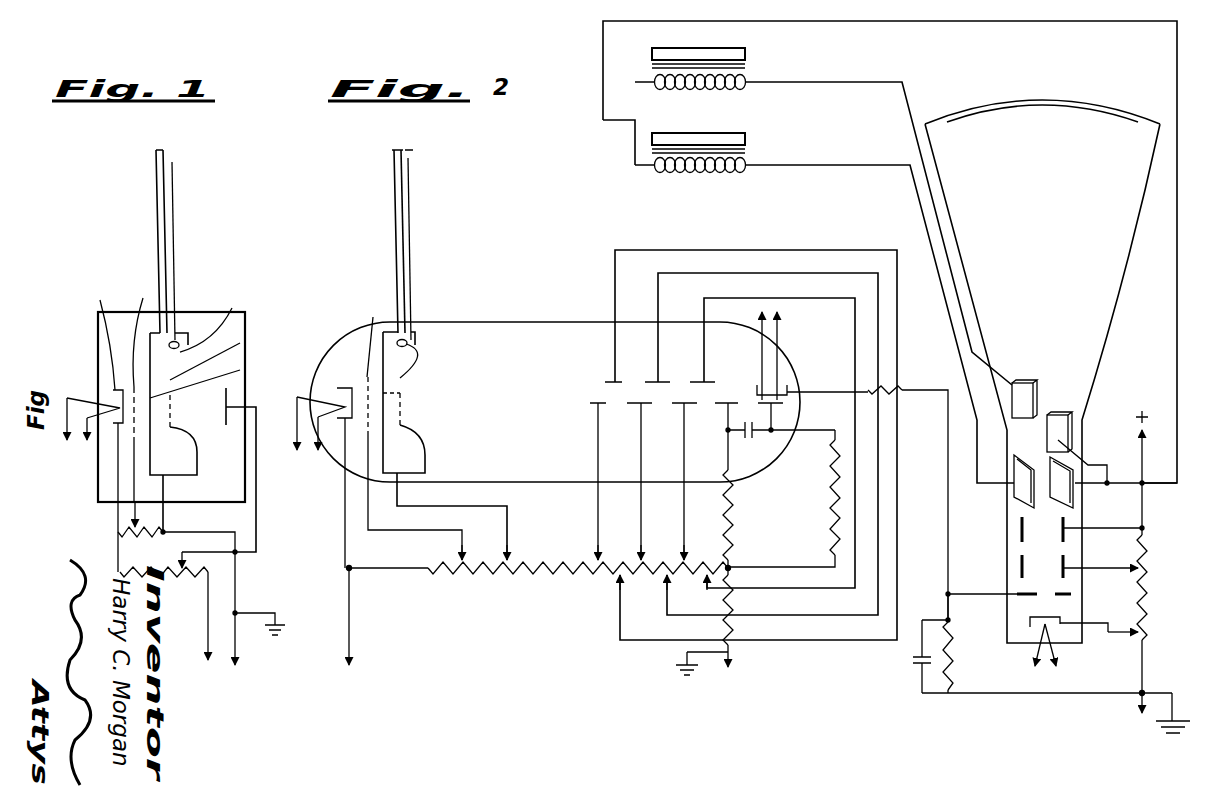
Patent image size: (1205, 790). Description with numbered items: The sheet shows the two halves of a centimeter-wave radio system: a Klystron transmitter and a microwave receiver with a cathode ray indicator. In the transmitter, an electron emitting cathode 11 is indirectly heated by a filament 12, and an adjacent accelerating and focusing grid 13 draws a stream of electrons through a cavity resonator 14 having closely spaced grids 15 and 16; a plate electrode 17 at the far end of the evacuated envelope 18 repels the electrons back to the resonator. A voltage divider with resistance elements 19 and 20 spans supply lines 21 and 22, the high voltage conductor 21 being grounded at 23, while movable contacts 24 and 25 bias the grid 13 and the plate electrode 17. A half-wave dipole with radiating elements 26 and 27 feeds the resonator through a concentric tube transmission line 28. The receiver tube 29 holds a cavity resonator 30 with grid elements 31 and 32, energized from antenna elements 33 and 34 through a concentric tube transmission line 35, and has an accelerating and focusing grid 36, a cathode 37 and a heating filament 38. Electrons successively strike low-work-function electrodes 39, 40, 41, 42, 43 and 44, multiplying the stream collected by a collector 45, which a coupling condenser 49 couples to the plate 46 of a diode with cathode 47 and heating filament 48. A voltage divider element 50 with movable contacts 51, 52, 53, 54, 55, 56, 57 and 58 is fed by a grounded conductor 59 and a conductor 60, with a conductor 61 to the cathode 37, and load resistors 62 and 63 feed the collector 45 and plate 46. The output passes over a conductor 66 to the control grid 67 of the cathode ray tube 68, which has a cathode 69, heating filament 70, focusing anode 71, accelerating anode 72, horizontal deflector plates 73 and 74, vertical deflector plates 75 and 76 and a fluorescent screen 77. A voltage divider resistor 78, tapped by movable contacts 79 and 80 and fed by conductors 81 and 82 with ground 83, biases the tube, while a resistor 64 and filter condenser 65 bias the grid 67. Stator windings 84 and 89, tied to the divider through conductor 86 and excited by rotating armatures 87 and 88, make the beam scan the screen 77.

In FIG. 1, the electron emitting cathode 11 is at (92, 337).
In FIG. 1, the filament 12 is at (115, 390).
In FIG. 1, the accelerating and focusing grid 13 is at (125, 388).
In FIG. 1, the cavity resonator 14 is at (197, 350).
In FIG. 1, the grid 15 is at (223, 355).
In FIG. 1, the grid 16 is at (213, 377).
In FIG. 1, the plate electrode 17 is at (234, 474).
In FIG. 1, the evacuated envelope 18 is at (218, 315).
In FIG. 1, the resistance element 19 is at (150, 530).
In FIG. 1, the resistance element 20 is at (203, 634).
In FIG. 1, the supply line 21 is at (240, 588).
In FIG. 1, the supply line 22 is at (210, 603).
In FIG. 1, the ground 23 is at (276, 616).
In FIG. 1, the movable contact 24 is at (130, 515).
In FIG. 1, the movable contact 25 is at (180, 560).
In FIG. 1, the radiating element 26 is at (156, 152).
In FIG. 1, the radiating element 27 is at (173, 152).
In FIG. 1, the concentric tube transmission line 28 is at (157, 210).
In FIG. 2, the electron discharge device 29 is at (544, 322).
In FIG. 2, the cavity resonator 30 is at (426, 352).
In FIG. 2, the grid element 31 is at (401, 394).
In FIG. 2, the grid element 32 is at (401, 415).
In FIG. 2, the antenna element 33 is at (388, 150).
In FIG. 2, the antenna element 34 is at (412, 152).
In FIG. 2, the concentric tube transmission line 35 is at (395, 216).
In FIG. 2, the accelerating and focusing grid 36 is at (362, 336).
In FIG. 2, the cathode 37 is at (362, 375).
In FIG. 2, the heating filament 38 is at (324, 478).
In FIG. 2, the electrode 39 is at (590, 405).
In FIG. 2, the electrode 40 is at (608, 382).
In FIG. 2, the electrode 41 is at (640, 410).
In FIG. 2, the electrode 42 is at (648, 382).
In FIG. 2, the electrode 43 is at (682, 410).
In FIG. 2, the electrode 44 is at (713, 382).
In FIG. 2, the collector 45 is at (726, 410).
In FIG. 2, the anode or plate 46 is at (754, 385).
In FIG. 2, the cathode 47 is at (790, 392).
In FIG. 2, the heating filament 48 is at (775, 385).
In FIG. 2, the coupling condenser 49 is at (752, 436).
In FIG. 2, the voltage divider element 50 is at (578, 583).
In FIG. 2, the movable contact 51 is at (460, 540).
In FIG. 2, the movable contact 52 is at (506, 528).
In FIG. 2, the movable contact 53 is at (595, 548).
In FIG. 2, the movable contact 54 is at (618, 605).
In FIG. 2, the movable contact 55 is at (624, 534).
In FIG. 2, the movable contact 56 is at (647, 609).
In FIG. 2, the movable contact 57 is at (682, 550).
In FIG. 2, the movable contact 58 is at (706, 592).
In FIG. 2, the conductor 59 is at (731, 660).
In FIG. 2, the conductor 60 is at (350, 606).
In FIG. 2, the conductor 61 is at (350, 552).
In FIG. 2, the load resistor 62 is at (733, 502).
In FIG. 2, the load resistor 63 is at (833, 468).
In FIG. 2, the resistor 64 is at (955, 675).
In FIG. 2, the filter condenser 65 is at (920, 668).
In FIG. 2, the conductor 66 is at (946, 510).
In FIG. 2, the control grid 67 is at (1023, 597).
In FIG. 2, the cathode ray tube 68 is at (1092, 366).
In FIG. 2, the cathode 69 is at (1030, 622).
In FIG. 2, the heating filament 70 is at (1040, 632).
In FIG. 2, the focusing anode 71 is at (1022, 568).
In FIG. 2, the accelerating anode 72 is at (1022, 533).
In FIG. 2, the horizontal deflector plate 73 is at (1020, 490).
In FIG. 2, the horizontal deflector plate 74 is at (1075, 500).
In FIG. 2, the vertical deflector plate 75 is at (1034, 386).
In FIG. 2, the vertical deflector plate 76 is at (1059, 415).
In FIG. 2, the fluorescent screen 77 is at (1028, 106).
In FIG. 2, the voltage divider resistor 78 is at (1148, 594).
In FIG. 2, the movable contact 79 is at (1117, 568).
In FIG. 2, the movable contact 80 is at (1117, 627).
In FIG. 2, the conductor 81 is at (1140, 697).
In FIG. 2, the conductor 82 is at (1143, 483).
In FIG. 2, the ground 83 is at (1172, 697).
In FIG. 2, the stator or field winding 84 is at (702, 174).
In FIG. 2, the conductor 86 is at (948, 20).
In FIG. 2, the rotating armature 87 is at (742, 135).
In FIG. 2, the armature 88 is at (746, 56).
In FIG. 2, the stator winding 89 is at (702, 90).